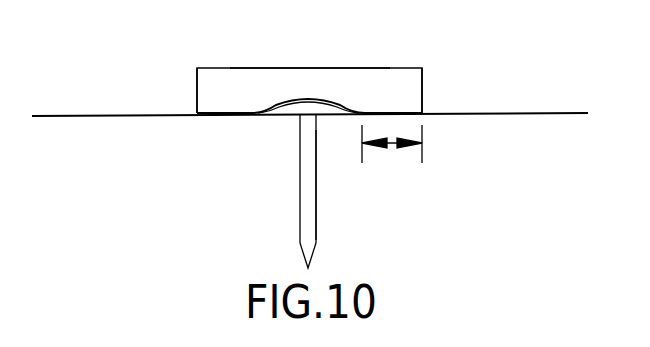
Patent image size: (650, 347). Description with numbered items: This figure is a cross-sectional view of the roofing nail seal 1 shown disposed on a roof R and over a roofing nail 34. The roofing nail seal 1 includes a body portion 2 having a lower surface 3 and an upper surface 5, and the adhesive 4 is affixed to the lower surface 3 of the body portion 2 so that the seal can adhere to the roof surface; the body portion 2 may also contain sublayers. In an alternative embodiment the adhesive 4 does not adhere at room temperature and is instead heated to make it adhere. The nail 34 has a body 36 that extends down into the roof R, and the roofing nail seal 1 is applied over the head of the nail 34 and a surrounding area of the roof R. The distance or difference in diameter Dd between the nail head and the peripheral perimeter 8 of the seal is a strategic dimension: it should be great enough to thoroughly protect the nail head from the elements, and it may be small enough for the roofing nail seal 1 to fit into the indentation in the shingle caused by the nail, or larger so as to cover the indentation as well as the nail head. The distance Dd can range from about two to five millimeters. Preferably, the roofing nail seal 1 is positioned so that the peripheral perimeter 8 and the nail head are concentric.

The roofing nail seal 1 is at (400, 58).
The body portion 2 is at (416, 80).
The lower surface 3 is at (196, 113).
The adhesive 4 is at (423, 113).
The upper surface 5 is at (244, 68).
The peripheral perimeter 8 is at (197, 82).
The roofing nail 34 is at (282, 195).
The body 36 is at (317, 208).
The roof R is at (553, 113).
The distance or difference in diameter Dd is at (392, 146).